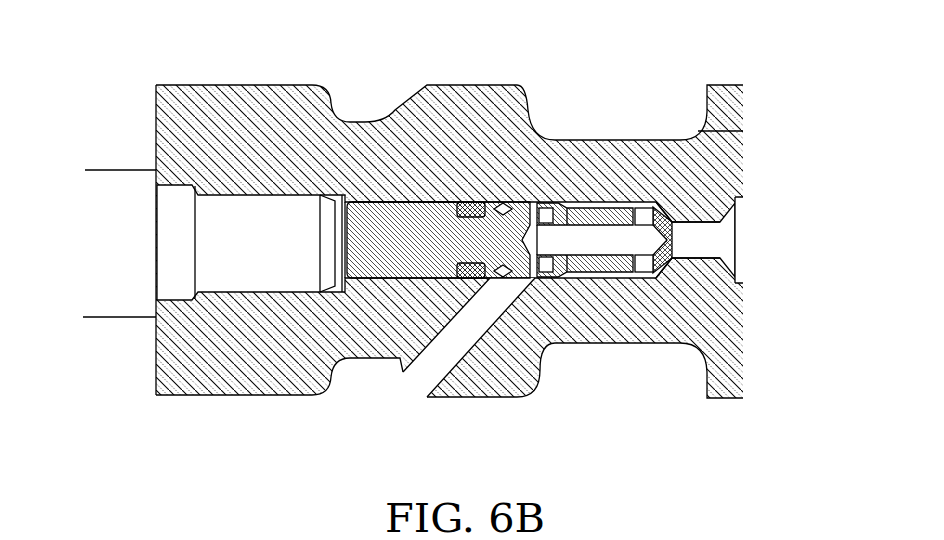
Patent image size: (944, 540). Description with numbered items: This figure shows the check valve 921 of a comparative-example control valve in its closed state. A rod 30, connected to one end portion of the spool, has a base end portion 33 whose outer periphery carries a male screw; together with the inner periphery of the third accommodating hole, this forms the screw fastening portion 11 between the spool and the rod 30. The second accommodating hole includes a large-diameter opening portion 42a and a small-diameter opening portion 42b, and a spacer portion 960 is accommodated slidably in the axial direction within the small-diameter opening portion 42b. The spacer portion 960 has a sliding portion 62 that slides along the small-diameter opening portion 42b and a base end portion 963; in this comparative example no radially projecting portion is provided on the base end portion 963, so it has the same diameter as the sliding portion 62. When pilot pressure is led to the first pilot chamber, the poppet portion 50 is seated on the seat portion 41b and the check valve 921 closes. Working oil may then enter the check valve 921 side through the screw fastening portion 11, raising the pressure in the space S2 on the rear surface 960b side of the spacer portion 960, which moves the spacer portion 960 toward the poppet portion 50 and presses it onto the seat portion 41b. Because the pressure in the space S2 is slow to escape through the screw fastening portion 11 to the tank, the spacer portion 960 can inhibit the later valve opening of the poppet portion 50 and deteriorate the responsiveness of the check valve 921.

The screw fastening portion 11 is at (209, 302).
The rod 30 is at (123, 163).
The base end portion 33 is at (243, 272).
The large-diameter opening portion 42a is at (344, 290).
The small-diameter opening portion 42b is at (510, 202).
The poppet portion 50 is at (664, 215).
The sliding portion 62 is at (452, 200).
The check valve 921 is at (589, 283).
The seat portion 41b is at (640, 278).
The spacer portion 960 is at (553, 196).
The rear surface 960b is at (348, 238).
The base end portion 963 is at (377, 200).
The space S2 is at (338, 291).